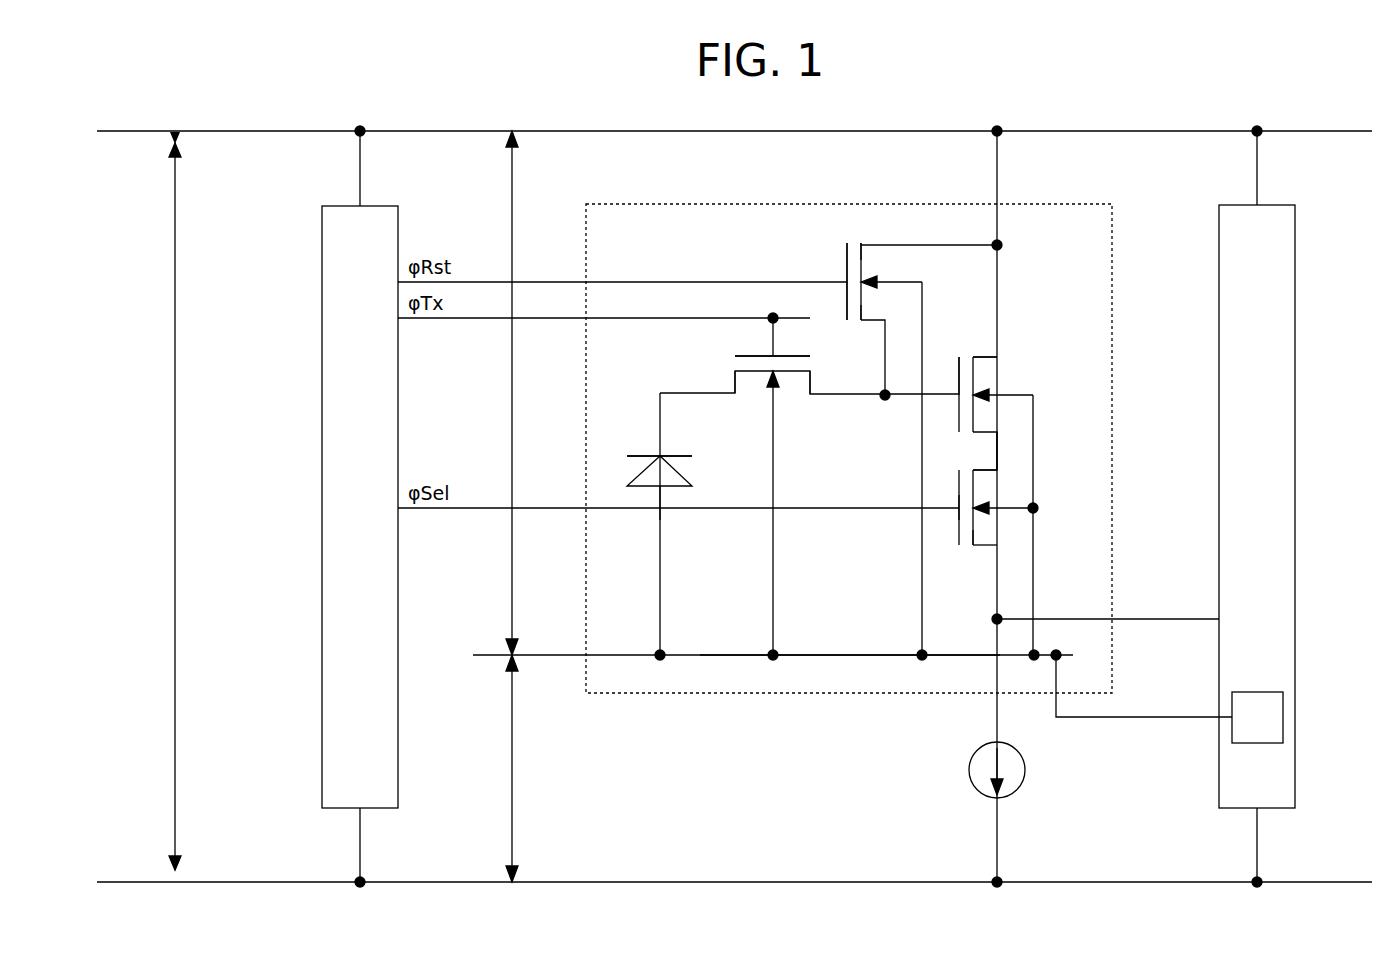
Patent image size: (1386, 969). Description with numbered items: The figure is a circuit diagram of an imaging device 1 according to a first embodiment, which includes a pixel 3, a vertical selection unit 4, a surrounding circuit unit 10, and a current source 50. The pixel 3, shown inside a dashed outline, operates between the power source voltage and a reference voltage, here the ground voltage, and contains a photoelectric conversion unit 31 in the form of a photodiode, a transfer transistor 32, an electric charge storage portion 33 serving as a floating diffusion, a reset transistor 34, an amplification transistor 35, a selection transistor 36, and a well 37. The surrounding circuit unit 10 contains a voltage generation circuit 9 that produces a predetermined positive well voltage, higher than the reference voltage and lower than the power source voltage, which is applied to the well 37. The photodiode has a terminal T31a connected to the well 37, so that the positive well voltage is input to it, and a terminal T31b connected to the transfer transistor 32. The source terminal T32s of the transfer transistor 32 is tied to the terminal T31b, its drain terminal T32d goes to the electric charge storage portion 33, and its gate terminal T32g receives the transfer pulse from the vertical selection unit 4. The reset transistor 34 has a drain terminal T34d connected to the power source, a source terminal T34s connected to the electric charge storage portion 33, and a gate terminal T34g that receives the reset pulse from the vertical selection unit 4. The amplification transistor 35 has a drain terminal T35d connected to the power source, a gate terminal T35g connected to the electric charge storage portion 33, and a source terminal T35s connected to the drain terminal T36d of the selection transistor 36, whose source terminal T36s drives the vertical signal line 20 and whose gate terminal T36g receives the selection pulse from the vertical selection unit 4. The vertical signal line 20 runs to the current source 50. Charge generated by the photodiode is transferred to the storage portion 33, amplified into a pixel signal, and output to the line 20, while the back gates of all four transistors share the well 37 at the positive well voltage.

The imaging device 1 is at (1302, 124).
The pixel 3 is at (1058, 204).
The vertical selection unit 4 is at (382, 206).
The voltage generation circuit 9 is at (1283, 716).
The surrounding circuit unit 10 is at (1276, 205).
The vertical signal line 20 is at (994, 708).
The photoelectric conversion unit 31 is at (688, 477).
The transfer transistor 32 is at (789, 392).
The electric charge storage portion 33 is at (886, 393).
The reset transistor 34 is at (830, 289).
The amplification transistor 35 is at (984, 375).
The selection transistor 36 is at (985, 522).
The well 37 is at (829, 652).
The current source 50 is at (1025, 752).
The terminal of photoelectric conversion unit T31a is at (657, 488).
The terminal of photoelectric conversion unit T31b is at (659, 455).
The gate terminal of transfer transistor T32g is at (771, 355).
The source terminal of transfer transistor T32s is at (735, 371).
The drain terminal of transfer transistor T32d is at (816, 396).
The drain terminal of reset transistor T34d is at (861, 244).
The gate terminal of reset transistor T34g is at (846, 282).
The source terminal of reset transistor T34s is at (861, 320).
The gate terminal of amplification transistor T35g is at (958, 392).
The drain terminal of amplification transistor T35d is at (974, 356).
The source terminal of amplification transistor T35s is at (998, 448).
The drain terminal of selection transistor T36d is at (972, 470).
The gate terminal of selection transistor T36g is at (958, 506).
The source terminal of selection transistor T36s is at (972, 547).